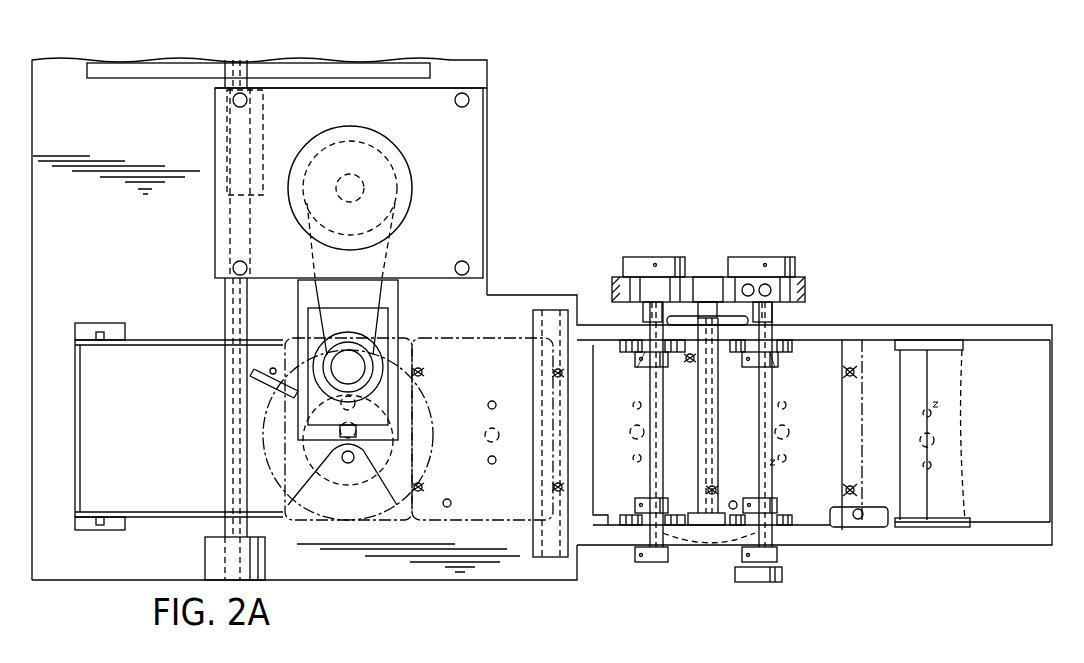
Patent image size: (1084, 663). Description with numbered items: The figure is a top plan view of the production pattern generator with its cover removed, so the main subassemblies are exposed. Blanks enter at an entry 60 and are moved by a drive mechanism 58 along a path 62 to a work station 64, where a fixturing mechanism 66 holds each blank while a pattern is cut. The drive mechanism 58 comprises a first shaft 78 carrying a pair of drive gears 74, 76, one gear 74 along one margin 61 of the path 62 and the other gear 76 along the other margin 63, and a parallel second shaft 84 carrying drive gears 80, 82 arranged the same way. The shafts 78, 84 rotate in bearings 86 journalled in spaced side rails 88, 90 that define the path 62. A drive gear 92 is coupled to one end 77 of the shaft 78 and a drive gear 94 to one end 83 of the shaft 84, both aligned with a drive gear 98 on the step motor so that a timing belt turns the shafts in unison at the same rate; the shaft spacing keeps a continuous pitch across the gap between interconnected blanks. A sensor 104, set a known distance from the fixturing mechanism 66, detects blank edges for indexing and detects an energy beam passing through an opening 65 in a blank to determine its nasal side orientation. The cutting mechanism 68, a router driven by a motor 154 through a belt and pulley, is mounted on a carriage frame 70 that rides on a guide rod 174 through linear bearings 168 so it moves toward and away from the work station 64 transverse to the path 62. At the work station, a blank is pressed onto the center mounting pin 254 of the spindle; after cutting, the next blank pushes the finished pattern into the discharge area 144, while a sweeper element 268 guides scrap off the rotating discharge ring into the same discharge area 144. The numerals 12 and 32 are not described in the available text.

The carriage frame 70 is at (463, 50).
The linear bearing 168 is at (266, 104).
The motor 154 is at (405, 148).
The guide rod 174 is at (250, 228).
The discharge area 144 is at (260, 422).
The sweeper element 268 is at (262, 378).
The cutting mechanism 68 is at (315, 346).
The center mounting pin 254 is at (334, 450).
The work station 64 is at (421, 338).
The fixturing mechanism 66 is at (348, 468).
The opening 65 is at (423, 371).
The entry 60 is at (1053, 372).
The drive mechanism 58 is at (828, 313).
The side rail 90 is at (895, 335).
The path 62 is at (945, 440).
The other margin 63 is at (870, 350).
The side rail 88 is at (850, 540).
The sensor 104 is at (862, 518).
The hemming head assembly 12 is at (739, 411).
The drive gear 94 is at (657, 257).
The drive gear 92 is at (760, 257).
The drive gear 98 is at (710, 277).
The bearing 86 is at (643, 307).
The shaft 84 is at (662, 422).
The drive gear 82 is at (633, 358).
The end of shaft 83 is at (640, 370).
The shaft 78 is at (752, 422).
The drive gear 76 is at (778, 356).
The end of shaft 77 is at (776, 375).
The drive gear 80 is at (635, 512).
The drive gear 74 is at (780, 515).
The one margin 61 is at (686, 511).
The mounting block 32 is at (782, 574).